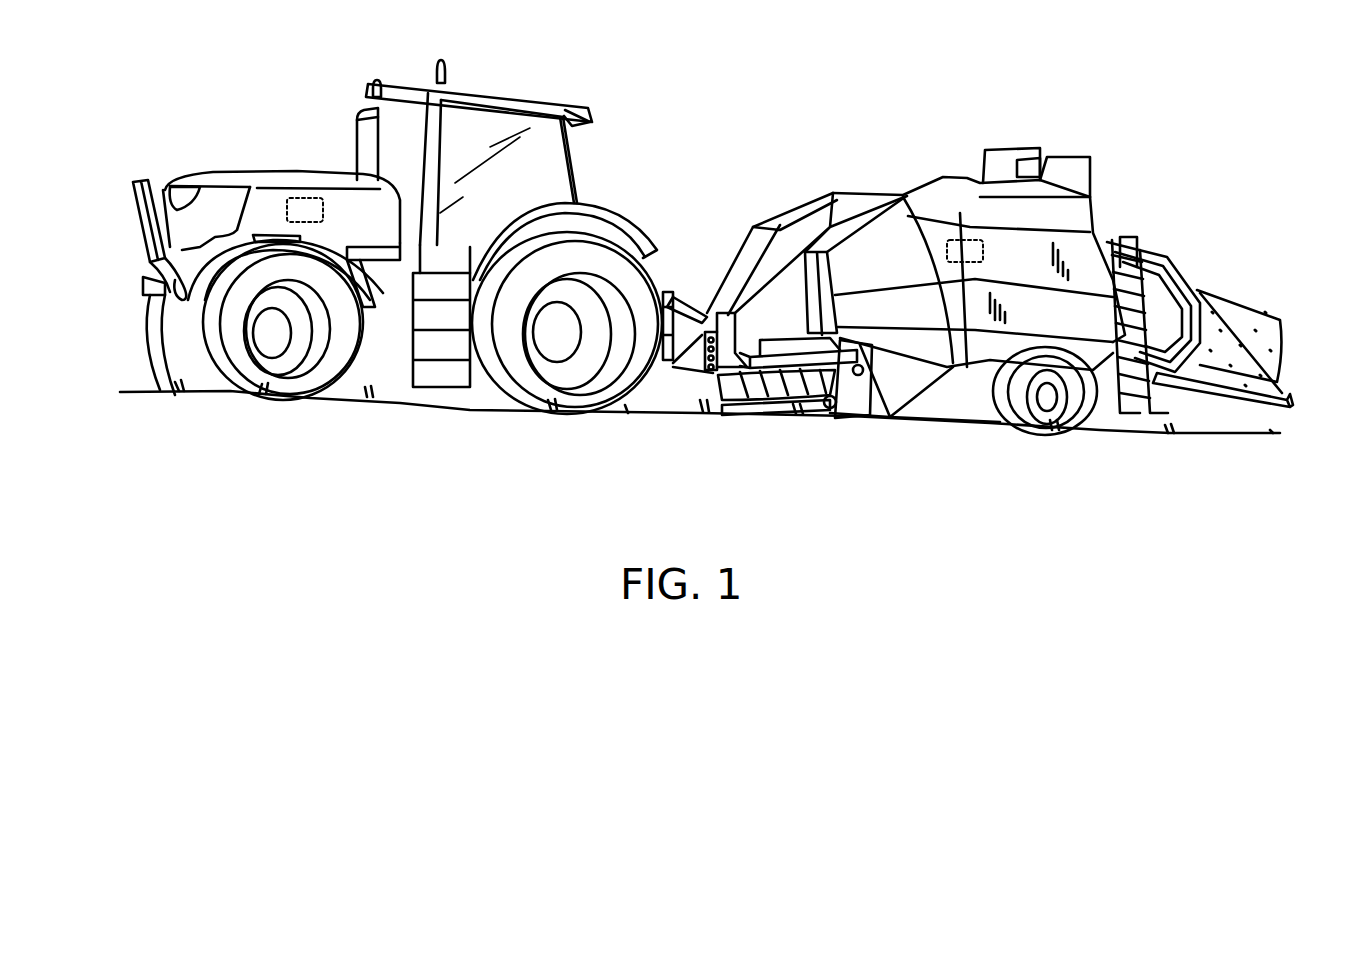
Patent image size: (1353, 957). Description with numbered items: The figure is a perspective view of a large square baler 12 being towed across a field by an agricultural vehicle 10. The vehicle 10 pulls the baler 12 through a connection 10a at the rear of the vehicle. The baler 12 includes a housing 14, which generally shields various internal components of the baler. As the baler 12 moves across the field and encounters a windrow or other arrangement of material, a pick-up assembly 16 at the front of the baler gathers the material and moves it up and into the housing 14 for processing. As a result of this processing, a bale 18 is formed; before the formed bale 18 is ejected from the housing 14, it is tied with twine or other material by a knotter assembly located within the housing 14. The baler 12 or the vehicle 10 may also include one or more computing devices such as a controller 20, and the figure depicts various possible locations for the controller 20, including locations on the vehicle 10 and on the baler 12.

The agricultural vehicle 10 is at (533, 100).
The connection 10a is at (683, 292).
The large square baler 12 is at (837, 178).
The housing 14 is at (1037, 213).
The pick-up assembly 16 is at (795, 413).
The bale 18 is at (1217, 287).
The controller 20 is at (300, 198).